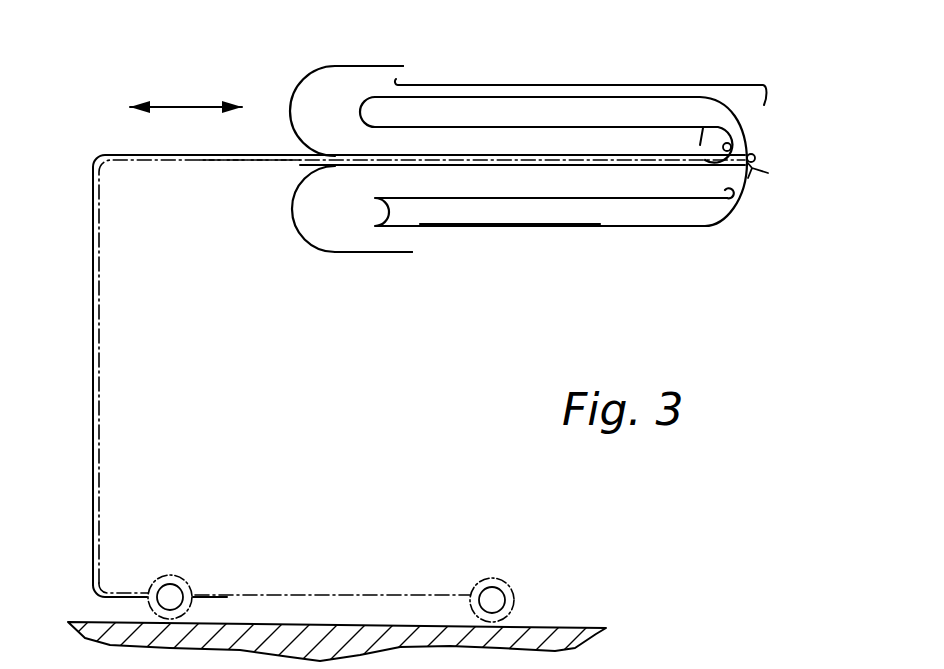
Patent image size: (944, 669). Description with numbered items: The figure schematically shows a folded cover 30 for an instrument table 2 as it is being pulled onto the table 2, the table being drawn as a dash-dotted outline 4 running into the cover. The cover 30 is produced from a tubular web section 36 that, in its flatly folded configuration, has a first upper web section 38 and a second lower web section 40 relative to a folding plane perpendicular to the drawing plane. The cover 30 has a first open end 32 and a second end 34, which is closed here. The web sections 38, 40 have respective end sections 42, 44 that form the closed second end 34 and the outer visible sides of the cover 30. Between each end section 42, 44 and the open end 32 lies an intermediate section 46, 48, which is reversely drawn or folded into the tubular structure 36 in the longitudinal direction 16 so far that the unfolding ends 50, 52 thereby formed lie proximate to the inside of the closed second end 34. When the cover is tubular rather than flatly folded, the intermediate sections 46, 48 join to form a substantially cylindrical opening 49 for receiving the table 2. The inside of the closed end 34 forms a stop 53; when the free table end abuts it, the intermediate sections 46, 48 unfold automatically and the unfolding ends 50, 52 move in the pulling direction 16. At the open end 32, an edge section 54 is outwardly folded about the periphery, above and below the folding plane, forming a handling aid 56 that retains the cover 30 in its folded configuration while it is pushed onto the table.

The instrument table 2 is at (150, 153).
The centre line of tape 4 is at (215, 158).
The longitudinal direction 16 is at (186, 107).
The cover 30 is at (702, 96).
The first open end 32 is at (283, 175).
The second end 34 is at (768, 173).
The tubular web section 36 is at (590, 223).
The first upper web section 38 is at (665, 85).
The second lower web section 40 is at (520, 224).
The end section 42 is at (589, 73).
The end section 44 is at (641, 233).
The intermediate section 46 is at (514, 128).
The intermediate section 48 is at (463, 186).
The cylindrical opening 49 is at (708, 128).
The unfolding end 50 is at (731, 147).
The unfolding end 52 is at (727, 198).
The stop 53 is at (754, 155).
The edge section 54 is at (395, 66).
The handling aid 56 is at (331, 644).